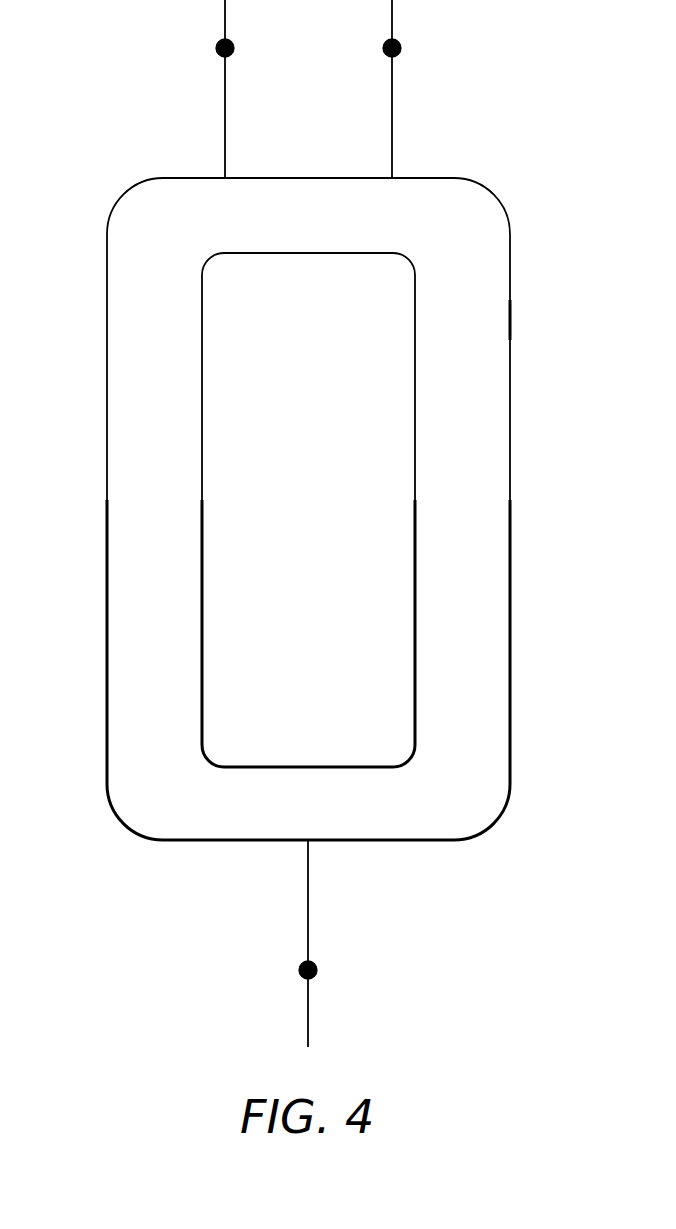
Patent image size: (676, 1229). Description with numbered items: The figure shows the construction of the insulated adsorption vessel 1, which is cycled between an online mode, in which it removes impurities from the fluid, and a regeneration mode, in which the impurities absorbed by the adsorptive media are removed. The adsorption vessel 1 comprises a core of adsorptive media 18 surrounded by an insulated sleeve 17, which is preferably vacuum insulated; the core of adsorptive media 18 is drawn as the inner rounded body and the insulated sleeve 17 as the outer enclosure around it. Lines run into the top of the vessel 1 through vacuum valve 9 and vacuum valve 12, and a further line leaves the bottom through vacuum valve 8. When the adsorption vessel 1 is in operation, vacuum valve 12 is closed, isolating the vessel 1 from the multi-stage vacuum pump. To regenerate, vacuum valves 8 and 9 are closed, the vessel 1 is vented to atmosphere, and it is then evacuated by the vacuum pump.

The adsorption vessel 1 is at (90, 206).
The vacuum valve 8 is at (317, 969).
The vacuum valve 9 is at (216, 48).
The vacuum valve 12 is at (401, 48).
The insulated sleeve 17 is at (512, 320).
The core of adsorptive media 18 is at (416, 415).